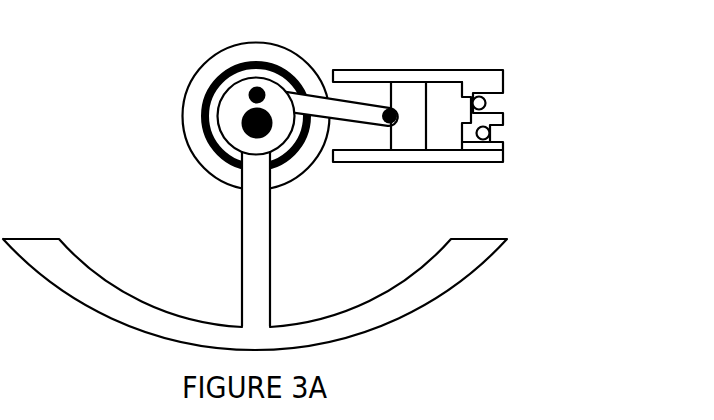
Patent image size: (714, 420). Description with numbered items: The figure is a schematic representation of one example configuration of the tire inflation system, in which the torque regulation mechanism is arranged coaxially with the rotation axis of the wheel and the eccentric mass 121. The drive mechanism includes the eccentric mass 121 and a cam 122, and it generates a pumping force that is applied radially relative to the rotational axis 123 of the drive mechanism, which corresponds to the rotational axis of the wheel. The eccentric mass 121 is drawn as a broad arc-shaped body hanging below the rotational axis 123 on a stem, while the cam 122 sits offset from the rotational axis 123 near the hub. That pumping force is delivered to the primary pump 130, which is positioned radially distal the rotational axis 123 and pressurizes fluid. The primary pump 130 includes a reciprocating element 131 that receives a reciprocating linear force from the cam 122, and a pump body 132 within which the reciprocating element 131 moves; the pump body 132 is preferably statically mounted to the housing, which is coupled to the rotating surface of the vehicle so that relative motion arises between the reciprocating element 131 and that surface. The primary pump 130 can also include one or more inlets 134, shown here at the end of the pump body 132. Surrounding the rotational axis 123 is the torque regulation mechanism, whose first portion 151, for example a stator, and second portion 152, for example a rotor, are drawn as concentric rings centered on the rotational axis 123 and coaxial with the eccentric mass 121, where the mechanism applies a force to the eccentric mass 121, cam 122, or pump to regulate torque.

The eccentric mass 121 is at (437, 300).
The cam 122 is at (232, 93).
The rotational axis 123 is at (267, 133).
The primary pump 130 is at (455, 108).
The reciprocating element 131 is at (414, 92).
The pump body 132 is at (450, 160).
The inlets 134 is at (498, 105).
The first portion 151 is at (210, 105).
The second portion 152 is at (227, 172).